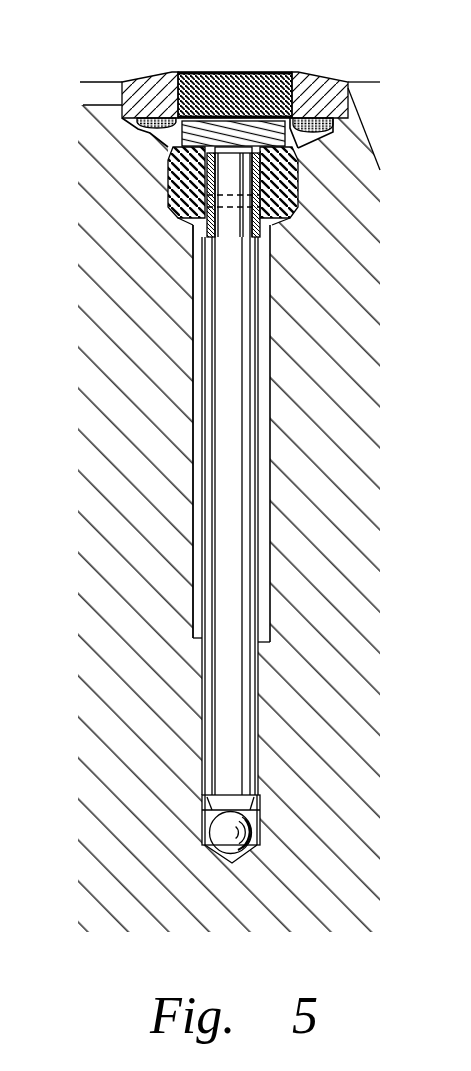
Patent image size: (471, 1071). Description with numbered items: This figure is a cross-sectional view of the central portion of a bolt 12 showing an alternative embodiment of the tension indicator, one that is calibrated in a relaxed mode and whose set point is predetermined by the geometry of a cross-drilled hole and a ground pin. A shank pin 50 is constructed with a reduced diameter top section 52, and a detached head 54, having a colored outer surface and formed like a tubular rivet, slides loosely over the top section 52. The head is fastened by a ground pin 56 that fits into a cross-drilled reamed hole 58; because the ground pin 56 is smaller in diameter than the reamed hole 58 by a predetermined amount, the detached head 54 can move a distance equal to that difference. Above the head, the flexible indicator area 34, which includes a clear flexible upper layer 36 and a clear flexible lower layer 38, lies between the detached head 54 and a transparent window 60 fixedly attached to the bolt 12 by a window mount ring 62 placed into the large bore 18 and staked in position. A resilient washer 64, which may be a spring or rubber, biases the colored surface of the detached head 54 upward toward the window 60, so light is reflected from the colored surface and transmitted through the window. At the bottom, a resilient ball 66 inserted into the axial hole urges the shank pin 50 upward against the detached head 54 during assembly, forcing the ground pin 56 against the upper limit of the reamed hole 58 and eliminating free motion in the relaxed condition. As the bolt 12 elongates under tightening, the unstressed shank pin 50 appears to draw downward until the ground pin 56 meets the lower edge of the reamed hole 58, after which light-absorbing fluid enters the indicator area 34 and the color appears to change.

The bolt 12 is at (93, 82).
The large bore 18 is at (83, 105).
The flexible indicator area 34 is at (333, 121).
The upper layer 36 is at (380, 82).
The lower layer 38 is at (322, 128).
The shank pin 50 is at (232, 478).
The reduced diameter top section 52 is at (233, 225).
The detached head 54 is at (182, 143).
The ground pin 56 is at (298, 209).
The reamed hole 58 is at (272, 225).
The transparent window 60 is at (253, 95).
The window mount ring 62 is at (311, 92).
The resilient washer 64 is at (185, 183).
The resilient ball 66 is at (228, 827).